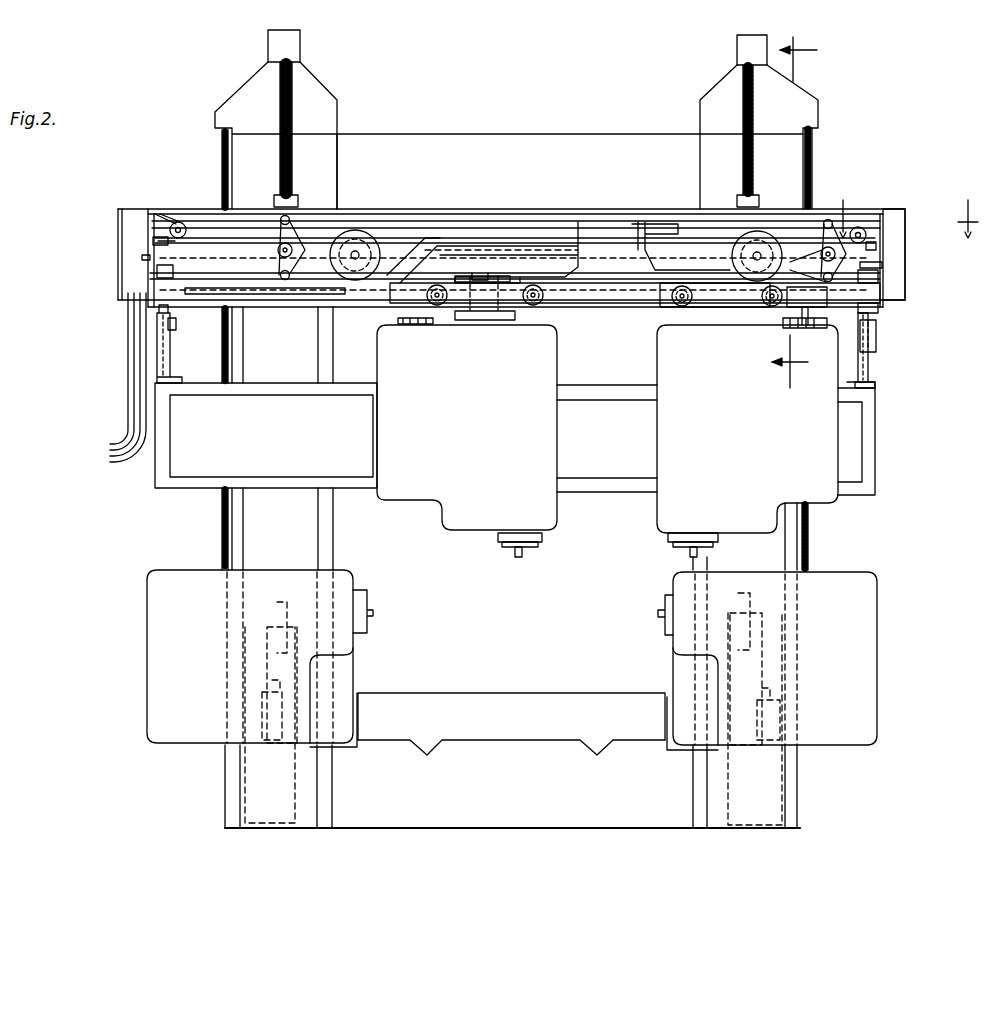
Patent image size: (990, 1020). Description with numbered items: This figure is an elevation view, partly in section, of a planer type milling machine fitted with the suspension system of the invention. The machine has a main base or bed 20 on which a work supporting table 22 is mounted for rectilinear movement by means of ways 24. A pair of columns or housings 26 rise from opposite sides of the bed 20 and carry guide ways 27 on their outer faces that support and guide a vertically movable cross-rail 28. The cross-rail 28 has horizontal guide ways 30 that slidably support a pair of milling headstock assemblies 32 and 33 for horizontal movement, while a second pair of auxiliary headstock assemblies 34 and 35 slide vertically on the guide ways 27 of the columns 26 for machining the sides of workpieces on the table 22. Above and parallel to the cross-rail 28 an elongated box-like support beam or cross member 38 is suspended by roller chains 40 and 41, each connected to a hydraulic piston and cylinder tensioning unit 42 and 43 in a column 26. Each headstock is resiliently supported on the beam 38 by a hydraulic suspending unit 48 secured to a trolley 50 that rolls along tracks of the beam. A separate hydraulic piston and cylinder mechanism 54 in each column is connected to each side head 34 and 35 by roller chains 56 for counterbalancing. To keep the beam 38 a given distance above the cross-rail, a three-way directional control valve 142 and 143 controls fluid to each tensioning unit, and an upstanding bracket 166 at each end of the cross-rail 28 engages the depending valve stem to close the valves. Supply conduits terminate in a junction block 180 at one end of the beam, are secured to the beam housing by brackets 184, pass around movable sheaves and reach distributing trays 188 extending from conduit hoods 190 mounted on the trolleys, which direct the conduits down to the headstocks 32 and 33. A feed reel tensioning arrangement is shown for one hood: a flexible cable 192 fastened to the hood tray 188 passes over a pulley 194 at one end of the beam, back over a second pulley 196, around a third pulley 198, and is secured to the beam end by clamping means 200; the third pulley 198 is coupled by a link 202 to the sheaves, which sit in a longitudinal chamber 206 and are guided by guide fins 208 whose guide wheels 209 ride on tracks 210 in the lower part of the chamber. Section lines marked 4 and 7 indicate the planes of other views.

The section line 4- 4 is at (803, 212).
The section line 7- 7 is at (909, 208).
The main base or bed 20 is at (532, 803).
The work supporting table 22 is at (512, 706).
The ways 24 is at (418, 758).
The columns or housings 26 is at (300, 545).
The guide ways 27 is at (318, 508).
The cross-rail 28 is at (312, 443).
The horizontal guide ways 30 is at (207, 390).
The milling headstock assembly 32 is at (488, 407).
The milling headstock assembly 33 is at (768, 416).
The auxiliary headstock assembly 34 is at (203, 675).
The auxiliary headstock assembly 35 is at (845, 660).
The support beam or cross member 38 is at (895, 208).
The roller chain 40 is at (290, 124).
The roller chain 41 is at (744, 126).
The tensioning unit 42 is at (265, 640).
The tensioning unit 43 is at (757, 630).
The hydraulic suspending unit 48 is at (508, 314).
The trolley 50 is at (483, 298).
The hydraulic piston and cylinder mechanism 54 is at (238, 776).
The roller chains 56 is at (222, 150).
The three-way directional control valve 142 is at (158, 270).
The three-way directional control valve 143 is at (868, 287).
The upstanding bracket 166 is at (198, 338).
The junction block 180 is at (128, 302).
The brackets 184 is at (558, 270).
The distributing tray 188 is at (655, 232).
The conduit hood 190 is at (392, 298).
The flexible cable 192 is at (500, 218).
The pulley 194 is at (180, 222).
The second pulley 196 is at (868, 237).
The third pulley 198 is at (838, 255).
The clamping means 200 is at (880, 266).
The link 202 is at (795, 226).
The longitudinal chamber 206 is at (297, 250).
The guide fins 208 is at (833, 272).
The guide wheels 209 is at (830, 292).
The tracks 210 is at (160, 245).